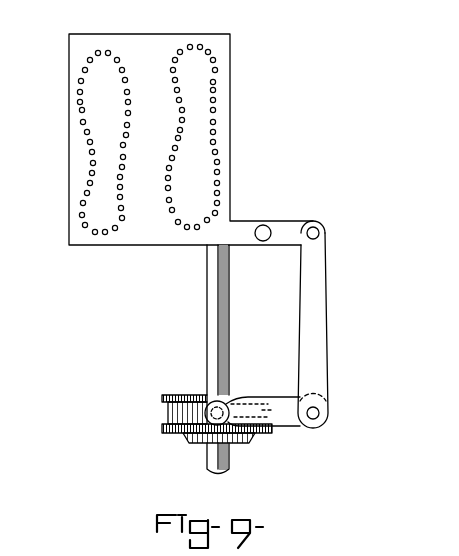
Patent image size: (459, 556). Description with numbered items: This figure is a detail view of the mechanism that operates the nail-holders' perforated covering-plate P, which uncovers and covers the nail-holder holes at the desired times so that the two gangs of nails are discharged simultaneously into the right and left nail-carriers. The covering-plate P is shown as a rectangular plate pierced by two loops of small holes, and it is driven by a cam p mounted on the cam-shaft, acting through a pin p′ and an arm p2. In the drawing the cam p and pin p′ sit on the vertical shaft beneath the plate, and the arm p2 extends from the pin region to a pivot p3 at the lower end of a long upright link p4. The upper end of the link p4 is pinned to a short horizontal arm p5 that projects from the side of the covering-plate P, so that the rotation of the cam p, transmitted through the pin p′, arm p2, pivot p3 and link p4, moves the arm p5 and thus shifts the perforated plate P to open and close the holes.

The perforated covering-plate P is at (191, 139).
The arm on pattern plate p5 is at (290, 221).
The connecting link p4 is at (319, 324).
The pivot pin p3 is at (319, 413).
The arm p2 is at (264, 424).
The cam p is at (241, 389).
The pin p′ is at (217, 436).